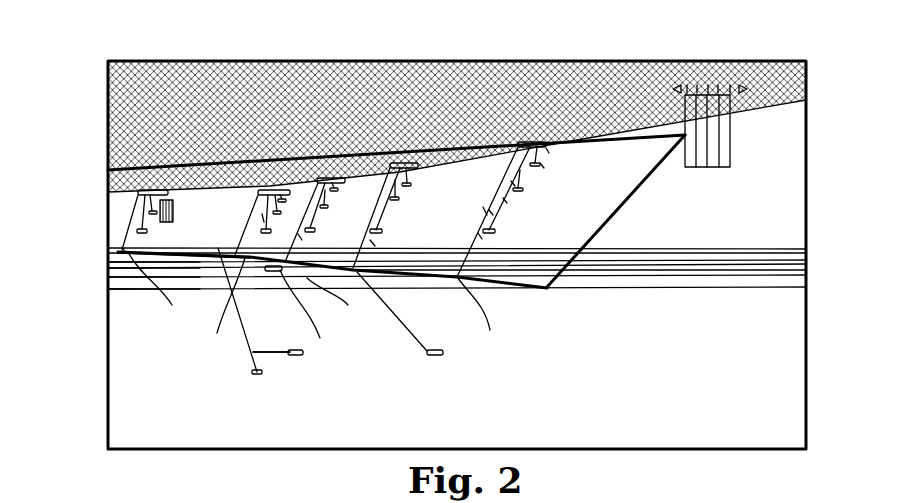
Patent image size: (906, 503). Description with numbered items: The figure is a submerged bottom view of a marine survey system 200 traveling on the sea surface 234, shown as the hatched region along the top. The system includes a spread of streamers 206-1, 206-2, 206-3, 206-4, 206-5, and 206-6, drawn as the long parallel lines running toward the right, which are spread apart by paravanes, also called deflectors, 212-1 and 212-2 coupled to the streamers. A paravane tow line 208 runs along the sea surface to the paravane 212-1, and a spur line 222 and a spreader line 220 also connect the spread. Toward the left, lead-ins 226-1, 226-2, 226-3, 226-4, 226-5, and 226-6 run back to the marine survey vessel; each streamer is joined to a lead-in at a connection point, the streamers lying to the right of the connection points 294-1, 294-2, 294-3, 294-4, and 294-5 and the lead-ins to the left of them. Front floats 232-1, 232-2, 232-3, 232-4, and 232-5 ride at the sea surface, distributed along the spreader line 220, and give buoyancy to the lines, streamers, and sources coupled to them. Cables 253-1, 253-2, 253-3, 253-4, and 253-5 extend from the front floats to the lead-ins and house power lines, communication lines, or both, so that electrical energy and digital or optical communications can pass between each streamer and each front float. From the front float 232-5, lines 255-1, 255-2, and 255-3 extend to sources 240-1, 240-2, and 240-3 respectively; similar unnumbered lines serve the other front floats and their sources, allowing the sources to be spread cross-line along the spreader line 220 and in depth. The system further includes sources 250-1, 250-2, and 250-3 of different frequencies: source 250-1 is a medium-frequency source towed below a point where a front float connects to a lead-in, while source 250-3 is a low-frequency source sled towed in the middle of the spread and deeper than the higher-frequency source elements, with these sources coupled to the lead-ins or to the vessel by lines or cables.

The marine survey system 200 is at (718, 41).
The sea surface 234 is at (298, 80).
The paravane tow line 208 is at (598, 138).
The paravane 212-1 is at (731, 140).
The paravane 212-2 is at (178, 207).
The spur line 222 is at (627, 207).
The streamer 206-1 is at (780, 248).
The streamer 206-2 is at (738, 253).
The streamer 206-3 is at (692, 260).
The streamer 206-4 is at (778, 270).
The streamer 206-5 is at (736, 276).
The streamer 206-6 is at (685, 288).
The lead-in 226-1 is at (118, 250).
The lead-in 226-2 is at (120, 254).
The lead-in 226-3 is at (115, 262).
The lead-in 226-4 is at (130, 277).
The lead-in 226-5 is at (130, 289).
The lead-in 226-6 is at (143, 289).
The front float 232-1 is at (158, 190).
The front float 232-2 is at (272, 190).
The front float 232-3 is at (331, 178).
The front float 232-4 is at (400, 163).
The front float 232-5 is at (531, 142).
The cable 253-1 is at (483, 210).
The cable 253-2 is at (371, 243).
The cable 253-3 is at (300, 237).
The cable 253-4 is at (262, 218).
The cable 253-5 is at (125, 250).
The line 255-1 is at (548, 150).
The line 255-2 is at (513, 183).
The line 255-3 is at (492, 213).
The source 240-1 is at (542, 165).
The source 240-2 is at (505, 200).
The source 240-3 is at (480, 236).
The connection point 294-1 is at (162, 290).
The connection point 294-2 is at (219, 306).
The connection point 294-3 is at (305, 352).
The connection point 294-4 is at (392, 290).
The connection point 294-5 is at (491, 315).
The source 250-1 is at (435, 356).
The source 250-2 is at (277, 272).
The source sled 250-3 is at (302, 357).
The spreader line 220 is at (320, 304).